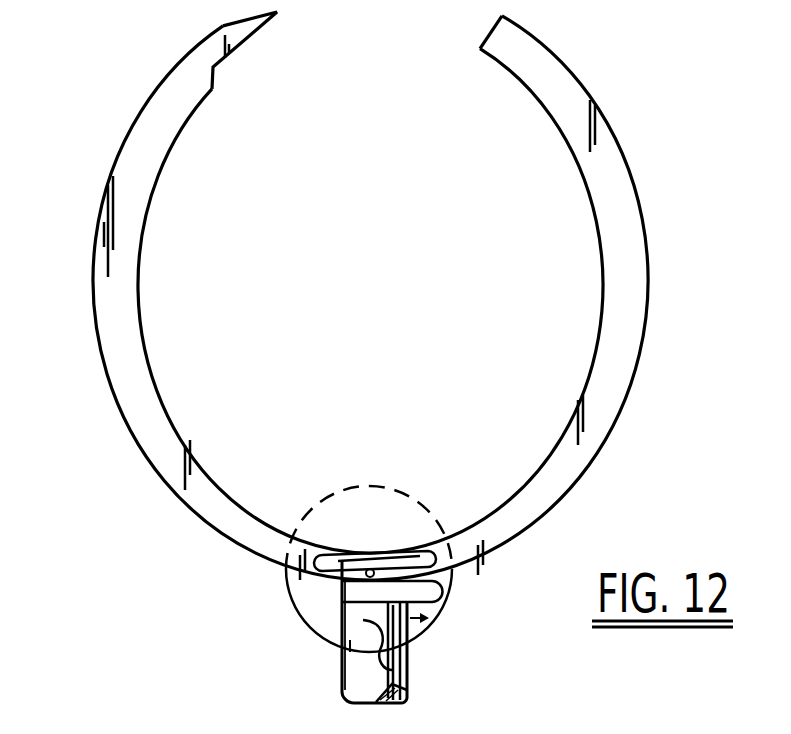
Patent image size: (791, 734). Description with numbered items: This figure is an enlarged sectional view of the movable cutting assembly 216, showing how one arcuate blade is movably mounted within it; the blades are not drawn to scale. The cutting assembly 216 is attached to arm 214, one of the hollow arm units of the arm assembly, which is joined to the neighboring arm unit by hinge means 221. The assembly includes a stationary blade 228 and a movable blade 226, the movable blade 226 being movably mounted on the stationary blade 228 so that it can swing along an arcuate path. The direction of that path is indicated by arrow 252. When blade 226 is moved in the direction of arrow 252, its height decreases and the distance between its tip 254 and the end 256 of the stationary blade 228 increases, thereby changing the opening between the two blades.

The movable cutting assembly 216 is at (100, 141).
The tip 254 is at (266, 22).
The end 256 is at (490, 27).
The blade 226 is at (117, 290).
The stationary blade 228 is at (635, 307).
The hinge means 221 is at (338, 607).
The arm 214 is at (343, 678).
The arrow 252 is at (408, 663).